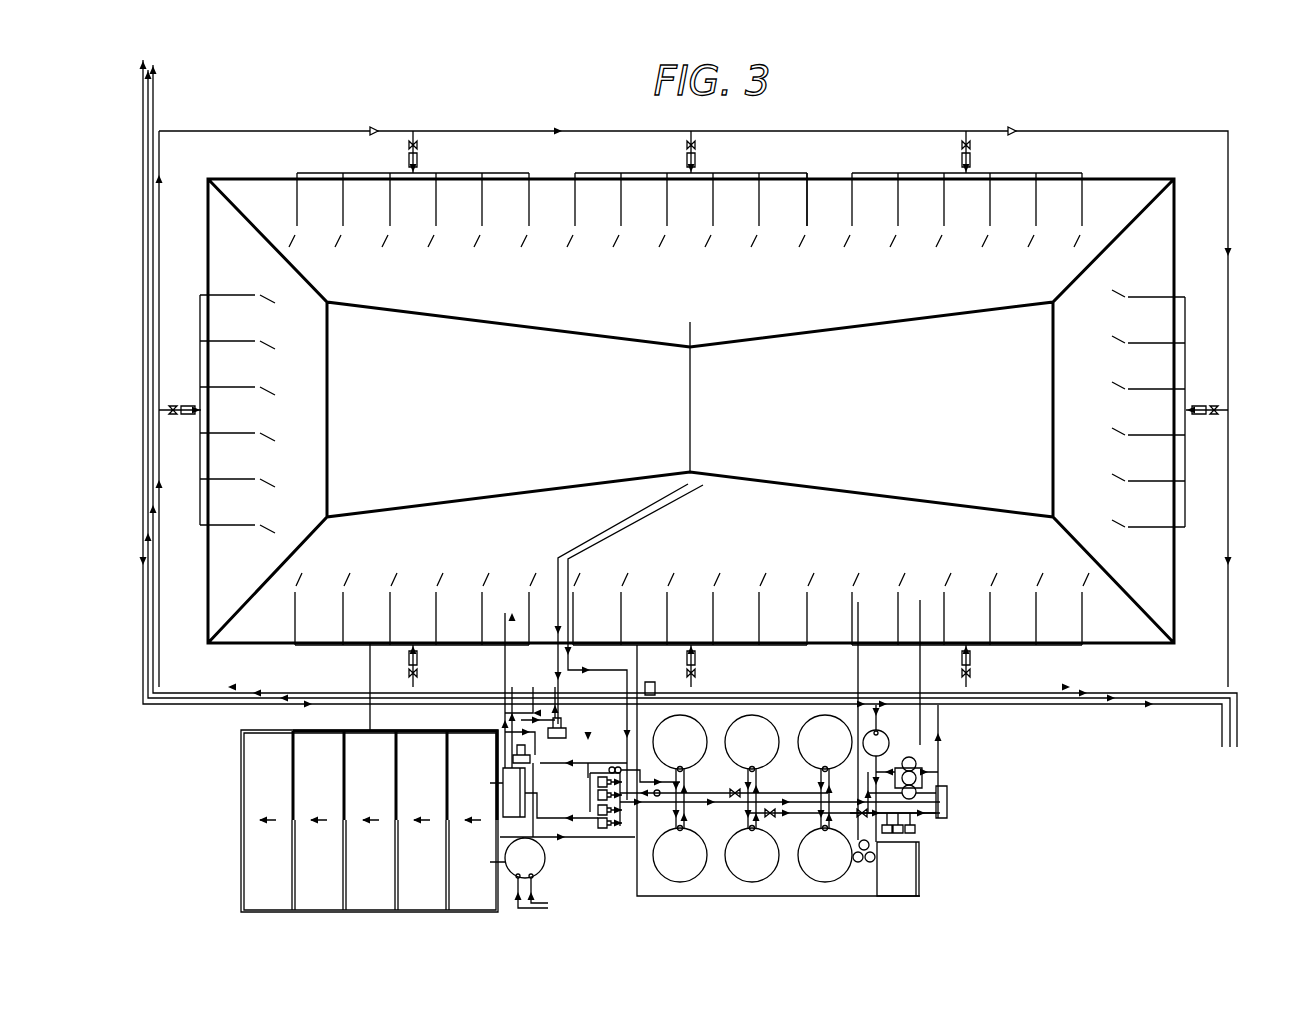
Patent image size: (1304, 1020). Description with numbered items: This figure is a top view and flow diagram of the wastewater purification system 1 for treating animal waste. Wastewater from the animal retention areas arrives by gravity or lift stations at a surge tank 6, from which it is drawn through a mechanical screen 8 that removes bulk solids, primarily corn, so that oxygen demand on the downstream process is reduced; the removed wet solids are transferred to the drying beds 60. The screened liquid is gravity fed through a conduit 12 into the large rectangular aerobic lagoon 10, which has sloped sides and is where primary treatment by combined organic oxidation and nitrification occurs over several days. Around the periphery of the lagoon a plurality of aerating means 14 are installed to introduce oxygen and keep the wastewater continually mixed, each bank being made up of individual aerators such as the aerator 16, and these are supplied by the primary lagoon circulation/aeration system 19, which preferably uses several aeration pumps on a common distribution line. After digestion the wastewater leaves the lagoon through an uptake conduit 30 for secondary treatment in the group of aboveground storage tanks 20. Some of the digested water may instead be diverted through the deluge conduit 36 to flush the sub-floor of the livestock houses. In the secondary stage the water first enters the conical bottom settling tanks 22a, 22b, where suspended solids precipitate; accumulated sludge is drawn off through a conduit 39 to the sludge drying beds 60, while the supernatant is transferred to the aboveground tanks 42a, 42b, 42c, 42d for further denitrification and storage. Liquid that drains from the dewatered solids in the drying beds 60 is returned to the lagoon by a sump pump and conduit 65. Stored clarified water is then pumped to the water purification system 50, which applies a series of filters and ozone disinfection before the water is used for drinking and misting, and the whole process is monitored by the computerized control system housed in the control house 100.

The wastewater purification system 1 is at (1052, 100).
The aerobic lagoon 10 is at (1010, 285).
The conduit 12 is at (512, 638).
The aerating means 14 is at (560, 253).
The aerator 16 is at (807, 208).
The primary lagoon circulation/aeration system 19 is at (553, 748).
The aboveground storage tanks 20 is at (747, 900).
The conical bottom settling tank 22a is at (680, 854).
The conical bottom settling tank 22b is at (680, 771).
The aboveground tank 42a is at (752, 854).
The aboveground tank 42b is at (752, 771).
The aboveground tank 42c is at (836, 854).
The aboveground tank 42d is at (825, 771).
The uptake conduit 30 is at (652, 512).
The deluge conduit 36 is at (580, 787).
The conduit 39 is at (552, 764).
The water purification system 50 is at (963, 784).
The surge tank 6 is at (505, 862).
The mechanical screen 8 is at (508, 790).
The drying beds 60 is at (215, 821).
The conduit 65 is at (358, 715).
The control house 100 is at (913, 865).